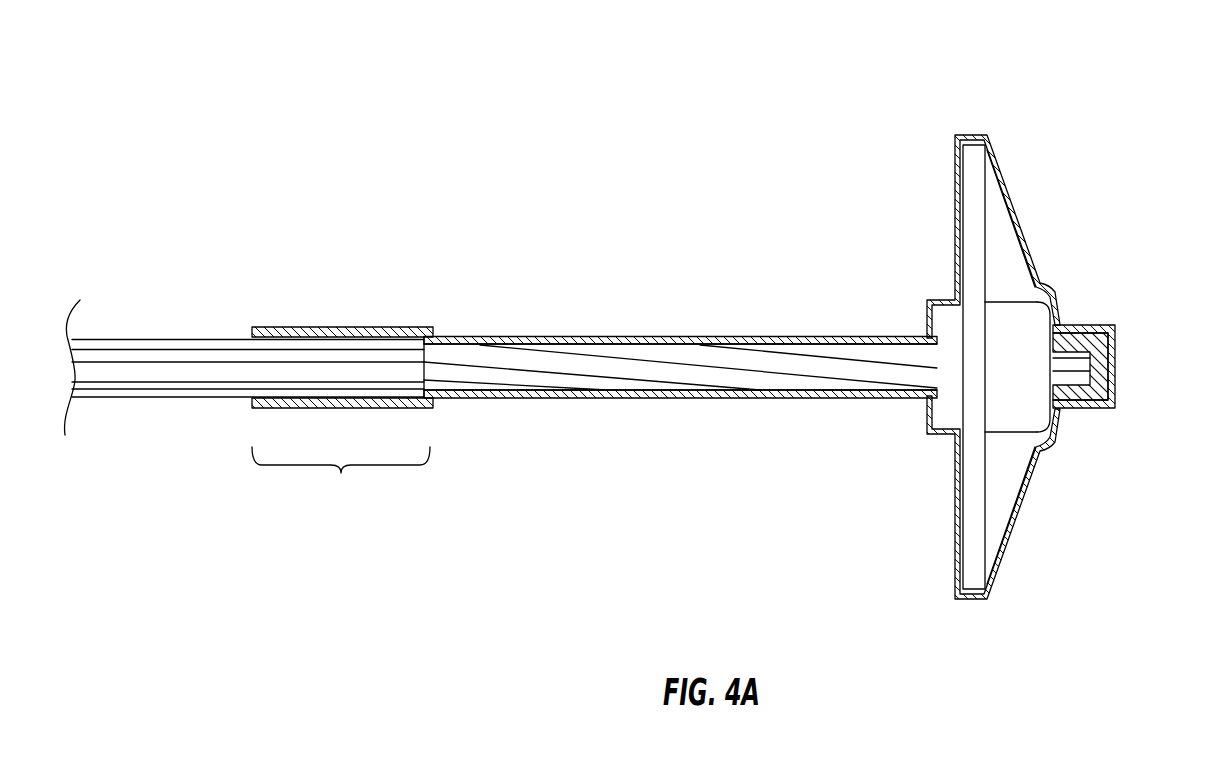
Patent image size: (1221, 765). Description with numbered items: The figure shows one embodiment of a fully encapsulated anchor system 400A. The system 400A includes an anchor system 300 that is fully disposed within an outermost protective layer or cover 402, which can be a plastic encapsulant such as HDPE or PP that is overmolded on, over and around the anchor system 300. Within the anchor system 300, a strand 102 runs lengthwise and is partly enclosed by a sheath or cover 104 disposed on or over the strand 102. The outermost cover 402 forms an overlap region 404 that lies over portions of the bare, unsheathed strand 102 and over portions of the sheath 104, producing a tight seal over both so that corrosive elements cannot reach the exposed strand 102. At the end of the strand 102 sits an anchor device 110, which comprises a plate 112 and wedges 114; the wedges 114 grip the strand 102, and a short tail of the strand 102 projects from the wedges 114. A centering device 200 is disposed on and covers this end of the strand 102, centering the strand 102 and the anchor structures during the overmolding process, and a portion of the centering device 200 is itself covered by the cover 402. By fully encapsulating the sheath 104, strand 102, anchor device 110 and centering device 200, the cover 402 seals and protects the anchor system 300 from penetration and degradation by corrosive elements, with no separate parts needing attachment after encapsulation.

The fully encapsulated anchor system 400A is at (297, 66).
The anchor system 300 is at (180, 258).
The outermost cover 402 is at (370, 327).
The overlap region 404 is at (341, 477).
The sheath 104 is at (608, 390).
The strand 102 is at (760, 380).
The anchor plate 112 is at (980, 245).
The anchor device 110 is at (975, 515).
The wedges 114 is at (1035, 363).
The centering device 200 is at (1091, 404).